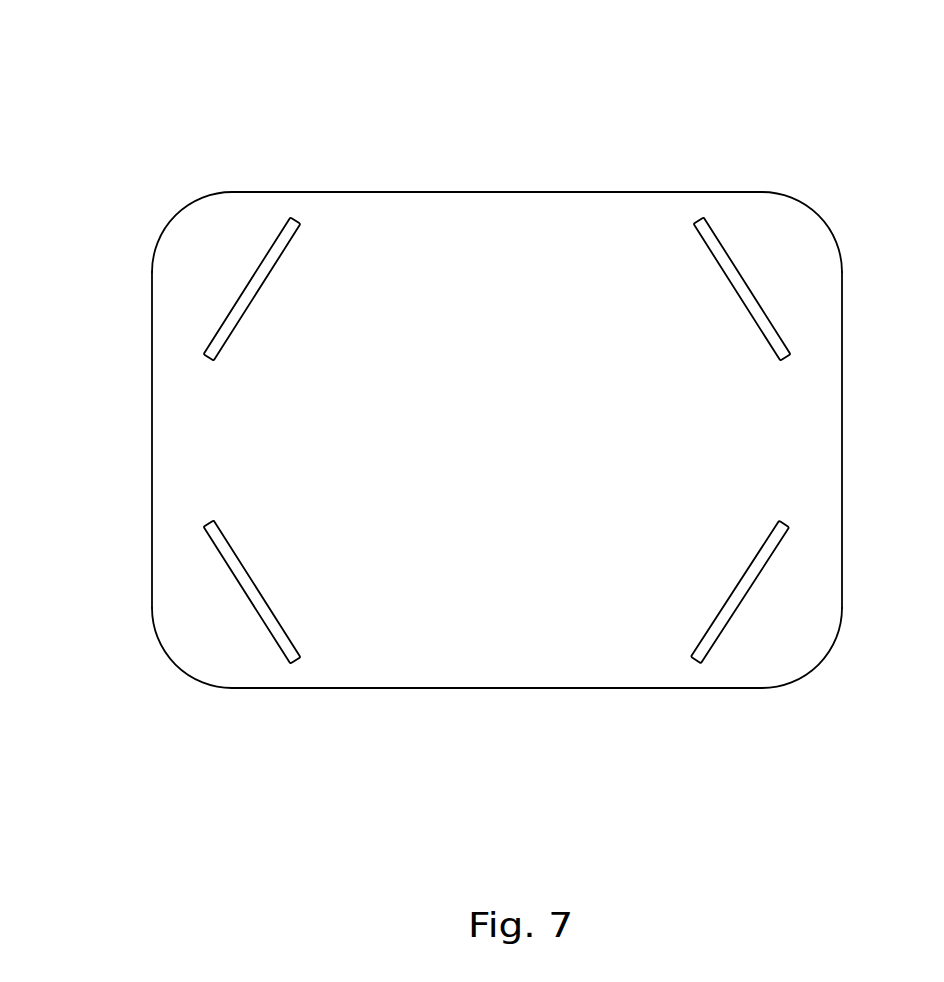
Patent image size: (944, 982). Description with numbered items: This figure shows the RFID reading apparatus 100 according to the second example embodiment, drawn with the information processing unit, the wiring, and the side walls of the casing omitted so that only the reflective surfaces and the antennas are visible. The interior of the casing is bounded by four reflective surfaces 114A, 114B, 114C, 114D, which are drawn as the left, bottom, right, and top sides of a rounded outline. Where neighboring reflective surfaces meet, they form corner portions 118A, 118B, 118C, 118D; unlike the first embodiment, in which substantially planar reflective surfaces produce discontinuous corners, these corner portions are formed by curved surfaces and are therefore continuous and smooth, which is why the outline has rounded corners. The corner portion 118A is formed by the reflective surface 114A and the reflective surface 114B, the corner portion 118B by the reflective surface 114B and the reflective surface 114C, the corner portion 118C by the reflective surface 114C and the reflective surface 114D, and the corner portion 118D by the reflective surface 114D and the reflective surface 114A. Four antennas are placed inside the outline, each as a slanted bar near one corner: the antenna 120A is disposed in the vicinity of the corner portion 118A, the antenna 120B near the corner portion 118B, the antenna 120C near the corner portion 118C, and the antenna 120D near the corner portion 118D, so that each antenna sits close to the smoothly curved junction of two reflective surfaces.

The RFID reading apparatus 100 is at (162, 84).
The reflective surface 114A is at (157, 397).
The reflective surface 114B is at (534, 688).
The reflective surface 114C is at (842, 420).
The reflective surface 114D is at (518, 195).
The corner portion 118A is at (192, 654).
The corner portion 118B is at (802, 654).
The corner portion 118C is at (802, 226).
The corner portion 118D is at (192, 226).
The antenna 120A is at (300, 664).
The antenna 120B is at (695, 664).
The antenna 120C is at (691, 216).
The antenna 120D is at (303, 216).